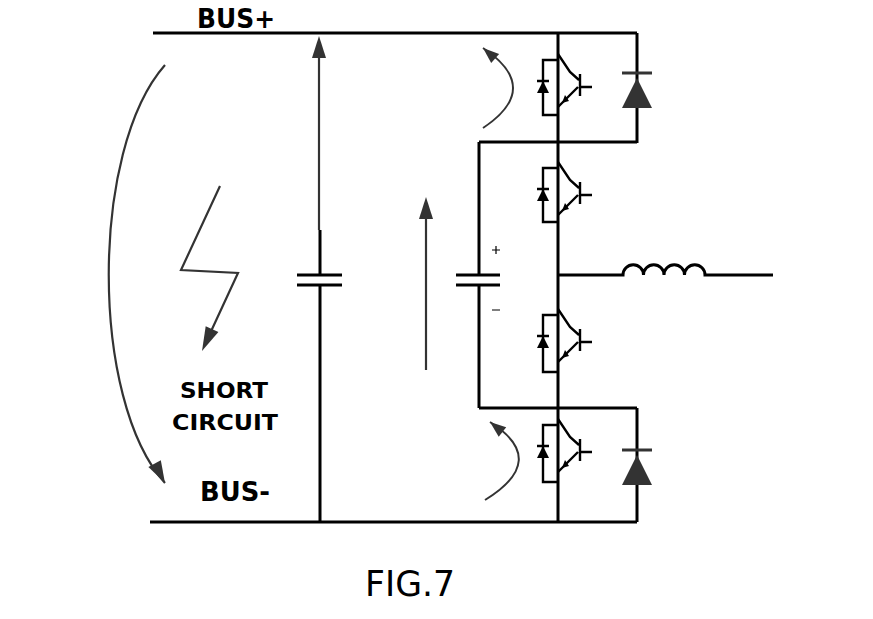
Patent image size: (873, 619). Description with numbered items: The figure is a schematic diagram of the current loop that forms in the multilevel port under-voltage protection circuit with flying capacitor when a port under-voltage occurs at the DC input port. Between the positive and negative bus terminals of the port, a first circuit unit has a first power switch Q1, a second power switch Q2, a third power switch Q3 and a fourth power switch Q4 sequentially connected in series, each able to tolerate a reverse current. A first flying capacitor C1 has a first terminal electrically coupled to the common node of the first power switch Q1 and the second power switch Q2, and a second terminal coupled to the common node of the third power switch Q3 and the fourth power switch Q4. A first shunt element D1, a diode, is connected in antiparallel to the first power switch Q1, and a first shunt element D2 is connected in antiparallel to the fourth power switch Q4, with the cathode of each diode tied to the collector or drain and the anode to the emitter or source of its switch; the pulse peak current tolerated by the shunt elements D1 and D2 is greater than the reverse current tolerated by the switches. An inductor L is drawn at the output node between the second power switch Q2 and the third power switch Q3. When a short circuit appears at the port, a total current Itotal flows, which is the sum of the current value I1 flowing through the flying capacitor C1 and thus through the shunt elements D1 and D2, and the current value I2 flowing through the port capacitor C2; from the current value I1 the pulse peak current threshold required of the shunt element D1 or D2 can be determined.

The first flying capacitor C1 is at (466, 275).
The port capacitor C2 is at (305, 376).
The first power switch Q1 is at (576, 94).
The second power switch Q2 is at (579, 204).
The third power switch Q3 is at (579, 353).
The fourth power switch Q4 is at (576, 462).
The first shunt element D1 is at (663, 88).
The first shunt element D2 is at (663, 465).
The output inductor L is at (665, 291).
The impulse current value I1 is at (409, 283).
The current value flowing through the port capacitor I2 is at (333, 133).
The sum of current values Itotal is at (99, 274).